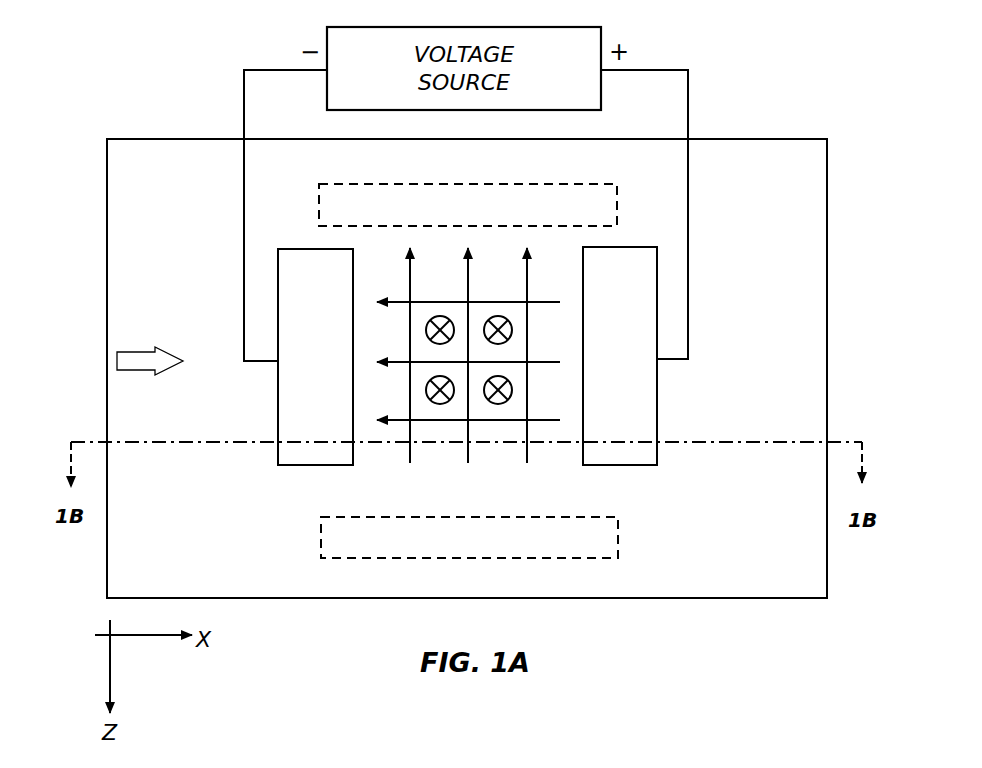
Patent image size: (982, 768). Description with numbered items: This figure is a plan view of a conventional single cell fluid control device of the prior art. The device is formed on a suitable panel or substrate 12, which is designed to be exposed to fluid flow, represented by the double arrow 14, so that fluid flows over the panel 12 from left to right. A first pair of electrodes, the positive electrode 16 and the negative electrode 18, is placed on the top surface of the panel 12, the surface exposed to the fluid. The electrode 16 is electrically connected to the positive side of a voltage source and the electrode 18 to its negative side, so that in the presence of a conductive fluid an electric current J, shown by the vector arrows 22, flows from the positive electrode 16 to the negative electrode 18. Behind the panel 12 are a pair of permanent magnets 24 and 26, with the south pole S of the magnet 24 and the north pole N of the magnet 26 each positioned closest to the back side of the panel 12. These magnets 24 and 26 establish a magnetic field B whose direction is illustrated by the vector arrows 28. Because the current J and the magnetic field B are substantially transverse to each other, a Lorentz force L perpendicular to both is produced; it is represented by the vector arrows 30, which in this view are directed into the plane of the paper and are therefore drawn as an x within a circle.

The panel 12 is at (497, 368).
The double arrow 14 is at (158, 343).
The positive electrode 16 is at (620, 356).
The negative electrode 18 is at (315, 357).
The vector arrows 22 is at (457, 339).
The permanent magnet 24 is at (468, 205).
The permanent magnet 26 is at (469, 537).
The vector arrows 28 is at (468, 369).
The vector arrows 30 is at (426, 331).